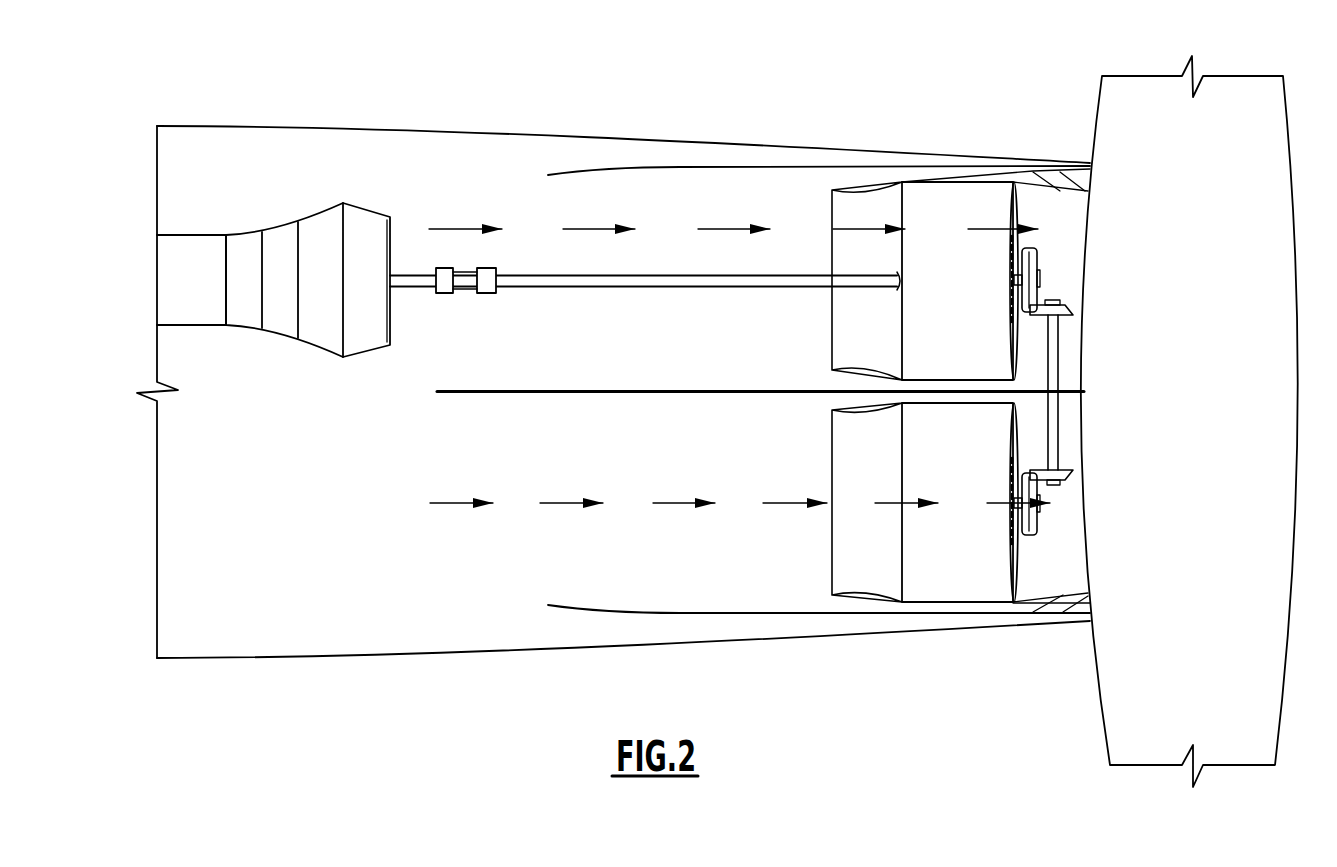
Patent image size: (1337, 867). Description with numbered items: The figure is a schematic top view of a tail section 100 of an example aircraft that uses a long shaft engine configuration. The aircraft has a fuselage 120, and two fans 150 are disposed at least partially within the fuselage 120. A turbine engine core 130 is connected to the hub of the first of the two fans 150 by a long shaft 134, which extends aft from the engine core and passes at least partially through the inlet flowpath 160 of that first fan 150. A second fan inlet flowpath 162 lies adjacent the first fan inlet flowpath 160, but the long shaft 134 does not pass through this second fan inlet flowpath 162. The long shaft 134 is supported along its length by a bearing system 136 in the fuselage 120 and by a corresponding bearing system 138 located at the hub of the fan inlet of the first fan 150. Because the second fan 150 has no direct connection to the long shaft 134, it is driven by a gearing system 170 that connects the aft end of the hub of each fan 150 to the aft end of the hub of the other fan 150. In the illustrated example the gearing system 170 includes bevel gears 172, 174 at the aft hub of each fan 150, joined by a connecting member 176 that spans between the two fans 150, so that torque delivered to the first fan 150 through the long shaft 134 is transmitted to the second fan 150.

The tail section 100 is at (657, 66).
The fuselage 120 is at (247, 632).
The turbine engine core 130 is at (247, 240).
The long shaft 134 is at (542, 275).
The bearing system 136 is at (467, 268).
The bearing system 138 is at (897, 272).
The fan 150 is at (960, 195).
The inlet flowpath 160 is at (609, 228).
The second fan inlet flowpath 162 is at (577, 504).
The gearing system 170 is at (1063, 392).
The bevel gear 172 is at (1033, 263).
The bevel gear 174 is at (1033, 520).
The connecting member 176 is at (1053, 439).